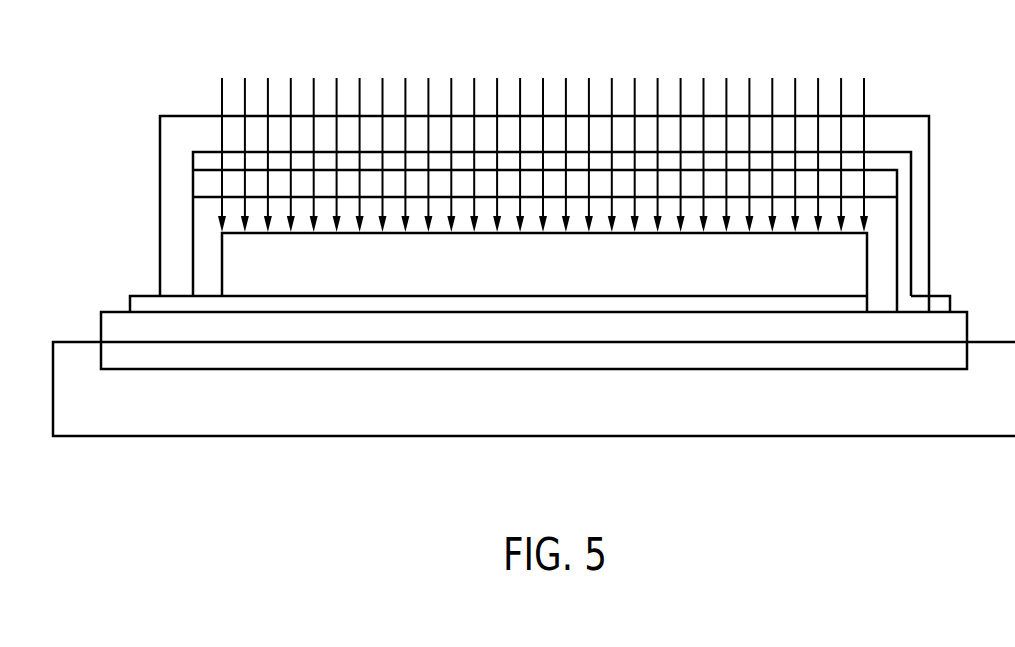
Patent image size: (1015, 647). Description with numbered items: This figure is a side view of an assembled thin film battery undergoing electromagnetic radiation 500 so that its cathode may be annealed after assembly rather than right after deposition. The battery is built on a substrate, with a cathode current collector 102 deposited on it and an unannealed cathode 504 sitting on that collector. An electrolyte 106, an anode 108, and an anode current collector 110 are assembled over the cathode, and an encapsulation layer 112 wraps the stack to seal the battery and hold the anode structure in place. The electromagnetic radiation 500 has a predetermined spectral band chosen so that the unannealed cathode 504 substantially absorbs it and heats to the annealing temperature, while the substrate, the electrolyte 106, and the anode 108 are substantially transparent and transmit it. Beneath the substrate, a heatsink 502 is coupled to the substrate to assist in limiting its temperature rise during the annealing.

The electromagnetic radiation 500 is at (864, 68).
The heatsink 502 is at (747, 436).
The unannealed cathode 504 is at (222, 264).
The cathode current collector 102 is at (130, 306).
The electrolyte 106 is at (193, 212).
The anode 108 is at (897, 178).
The anode current collector 110 is at (948, 296).
The encapsulation layer 112 is at (931, 206).